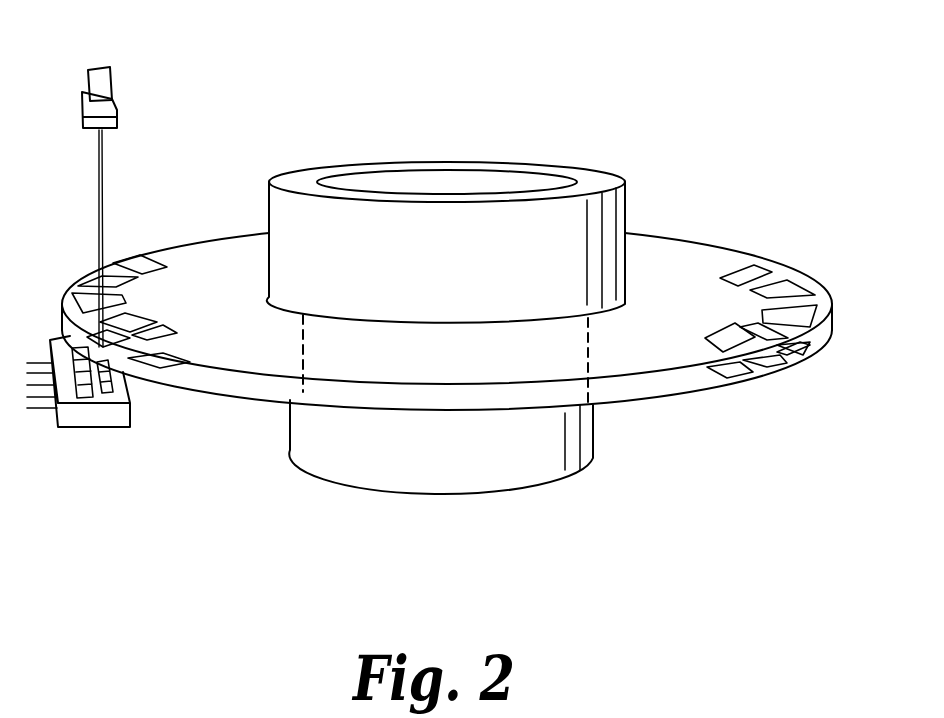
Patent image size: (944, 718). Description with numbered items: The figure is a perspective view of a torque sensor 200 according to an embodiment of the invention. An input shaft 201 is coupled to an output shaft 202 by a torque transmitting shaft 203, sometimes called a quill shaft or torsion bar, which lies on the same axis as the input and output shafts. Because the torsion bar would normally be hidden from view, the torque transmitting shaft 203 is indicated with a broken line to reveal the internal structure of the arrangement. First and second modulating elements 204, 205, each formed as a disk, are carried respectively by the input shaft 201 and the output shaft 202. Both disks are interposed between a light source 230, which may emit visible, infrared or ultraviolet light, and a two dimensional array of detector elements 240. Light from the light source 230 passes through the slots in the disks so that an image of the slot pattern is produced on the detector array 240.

The torque sensor 200 is at (693, 163).
The input shaft 201 is at (537, 165).
The output shaft 202 is at (515, 492).
The torque transmitting shaft 203 is at (297, 352).
The first modulating element 204 is at (763, 380).
The second modulating element 205 is at (708, 246).
The light source 230 is at (113, 90).
The two dimensional array of detector elements 240 is at (80, 428).